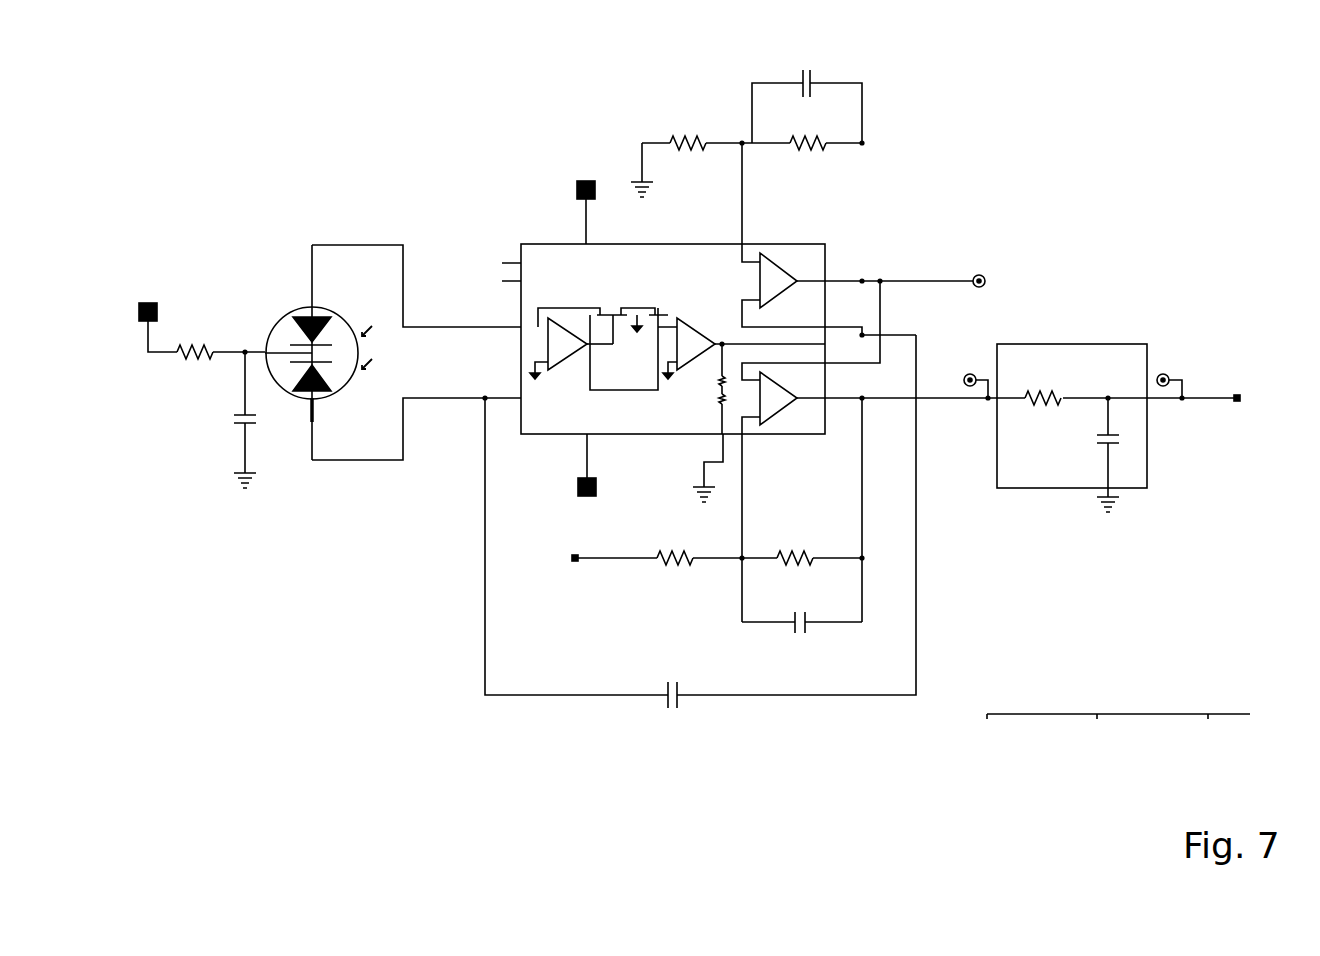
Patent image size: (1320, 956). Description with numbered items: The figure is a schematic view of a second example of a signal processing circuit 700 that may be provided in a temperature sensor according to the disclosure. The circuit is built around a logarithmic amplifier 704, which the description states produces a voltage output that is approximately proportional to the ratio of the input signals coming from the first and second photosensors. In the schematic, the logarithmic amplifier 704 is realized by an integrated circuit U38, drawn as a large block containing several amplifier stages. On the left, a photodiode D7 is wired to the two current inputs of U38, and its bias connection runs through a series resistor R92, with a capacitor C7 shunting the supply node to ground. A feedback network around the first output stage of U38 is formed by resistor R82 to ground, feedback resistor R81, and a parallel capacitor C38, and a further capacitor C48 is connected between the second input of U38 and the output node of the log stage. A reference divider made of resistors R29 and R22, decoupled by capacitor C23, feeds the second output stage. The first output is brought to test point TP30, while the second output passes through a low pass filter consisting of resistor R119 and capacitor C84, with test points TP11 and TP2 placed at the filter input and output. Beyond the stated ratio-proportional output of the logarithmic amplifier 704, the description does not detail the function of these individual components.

The signal processing circuit 700 is at (264, 88).
The logarithmic amplifier 704 is at (491, 231).
The LOG102 logarithmic amplifier U38 is at (763, 325).
The photodiode D7 is at (318, 352).
The resistor R92 is at (195, 355).
The capacitor C7 is at (253, 420).
The capacitor C48 is at (700, 526).
The resistor R82 is at (686, 157).
The resistor R81 is at (802, 147).
The capacitor C38 is at (807, 106).
The resistor R29 is at (690, 561).
The resistor R22 is at (802, 561).
The capacitor C23 is at (802, 626).
The resistor R119 is at (1120, 404).
The capacitor C84 is at (1111, 455).
The test point TP30 is at (979, 276).
The test point TP11 is at (975, 381).
The test point TP2 is at (1169, 381).